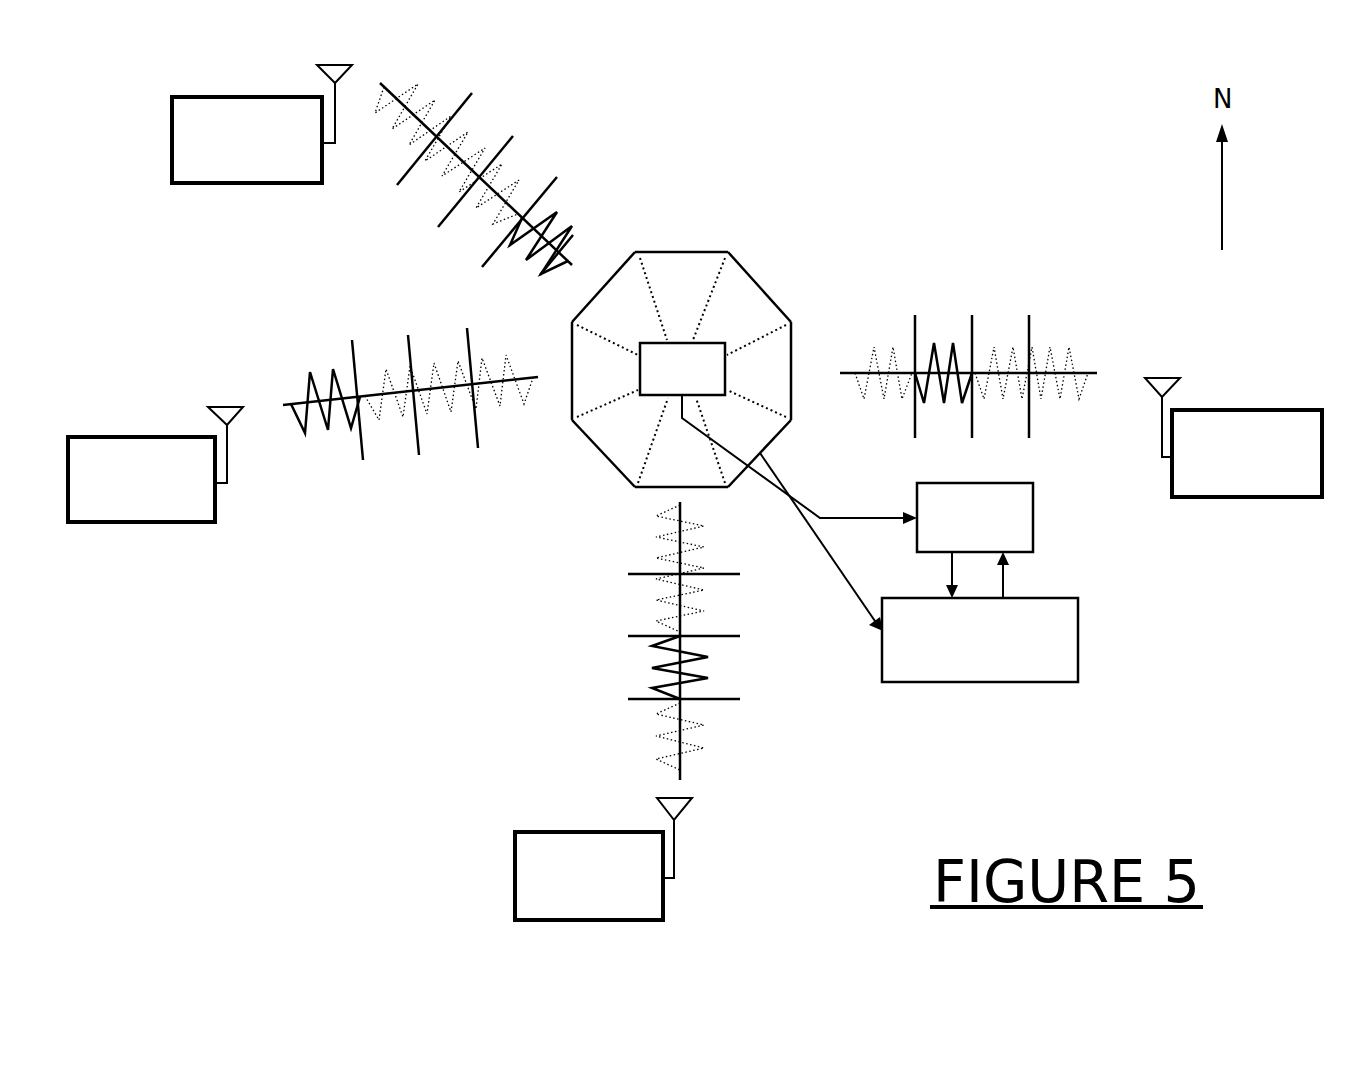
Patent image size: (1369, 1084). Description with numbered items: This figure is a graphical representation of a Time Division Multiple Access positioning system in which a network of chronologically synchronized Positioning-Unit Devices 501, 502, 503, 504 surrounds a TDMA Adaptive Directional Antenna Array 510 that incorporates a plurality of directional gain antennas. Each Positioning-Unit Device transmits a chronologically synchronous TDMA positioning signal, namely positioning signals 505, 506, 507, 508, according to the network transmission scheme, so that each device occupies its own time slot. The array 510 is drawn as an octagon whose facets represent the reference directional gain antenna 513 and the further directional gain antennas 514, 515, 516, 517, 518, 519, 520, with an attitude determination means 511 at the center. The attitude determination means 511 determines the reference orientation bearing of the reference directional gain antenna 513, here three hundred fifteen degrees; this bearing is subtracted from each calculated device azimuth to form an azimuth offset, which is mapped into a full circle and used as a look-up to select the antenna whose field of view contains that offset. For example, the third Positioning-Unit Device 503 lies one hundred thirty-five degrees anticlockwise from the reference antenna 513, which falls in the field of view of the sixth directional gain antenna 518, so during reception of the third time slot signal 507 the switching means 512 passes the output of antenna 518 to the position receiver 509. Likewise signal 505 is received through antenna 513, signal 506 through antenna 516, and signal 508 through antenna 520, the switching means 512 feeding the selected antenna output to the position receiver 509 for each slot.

The Positioning-Unit Device 501 is at (238, 185).
The Positioning-Unit Device 502 is at (1263, 498).
The Positioning-Unit Device 503 is at (645, 920).
The Positioning-Unit Device 504 is at (125, 524).
The positioning signal 505 is at (560, 188).
The positioning signal 506 is at (951, 310).
The positioning signal 507 is at (627, 656).
The positioning signal 508 is at (316, 346).
The position receiver 509 is at (1078, 673).
The TDMA Adaptive Directional Antenna Array 510 is at (685, 346).
The attitude determination means 511 is at (713, 370).
The switching means 512 is at (1033, 537).
The reference directional gain antenna 513 is at (615, 268).
The directional gain antenna 514 is at (713, 250).
The directional gain antenna 515 is at (763, 282).
The directional gain antenna 516 is at (792, 327).
The directional gain antenna 517 is at (780, 438).
The sixth directional gain antenna 518 is at (668, 490).
The directional gain antenna 519 is at (598, 455).
The directional gain antenna 520 is at (567, 340).